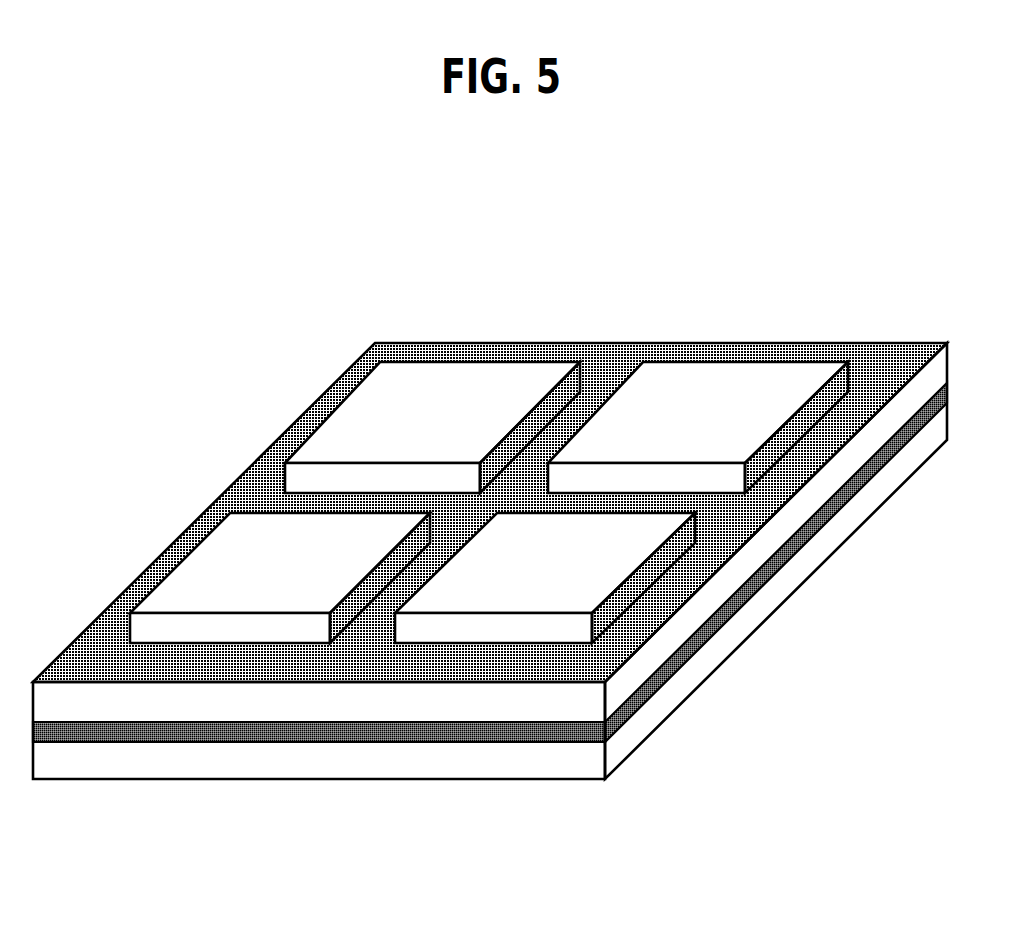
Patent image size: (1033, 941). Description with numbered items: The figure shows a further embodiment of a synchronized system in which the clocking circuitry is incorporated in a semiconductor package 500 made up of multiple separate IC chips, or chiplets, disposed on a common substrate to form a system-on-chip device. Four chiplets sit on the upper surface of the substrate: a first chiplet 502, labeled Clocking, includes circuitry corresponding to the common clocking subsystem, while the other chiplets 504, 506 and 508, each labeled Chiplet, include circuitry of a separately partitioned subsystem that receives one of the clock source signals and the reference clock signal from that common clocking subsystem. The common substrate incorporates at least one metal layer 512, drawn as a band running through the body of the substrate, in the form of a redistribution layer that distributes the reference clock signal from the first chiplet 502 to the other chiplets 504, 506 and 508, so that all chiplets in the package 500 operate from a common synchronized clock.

The semiconductor package 500 is at (490, 551).
The first chiplet 502 is at (552, 343).
The chiplet 504 is at (305, 412).
The chiplet 506 is at (740, 343).
The chiplet 508 is at (657, 577).
The metal layer 512 is at (198, 743).